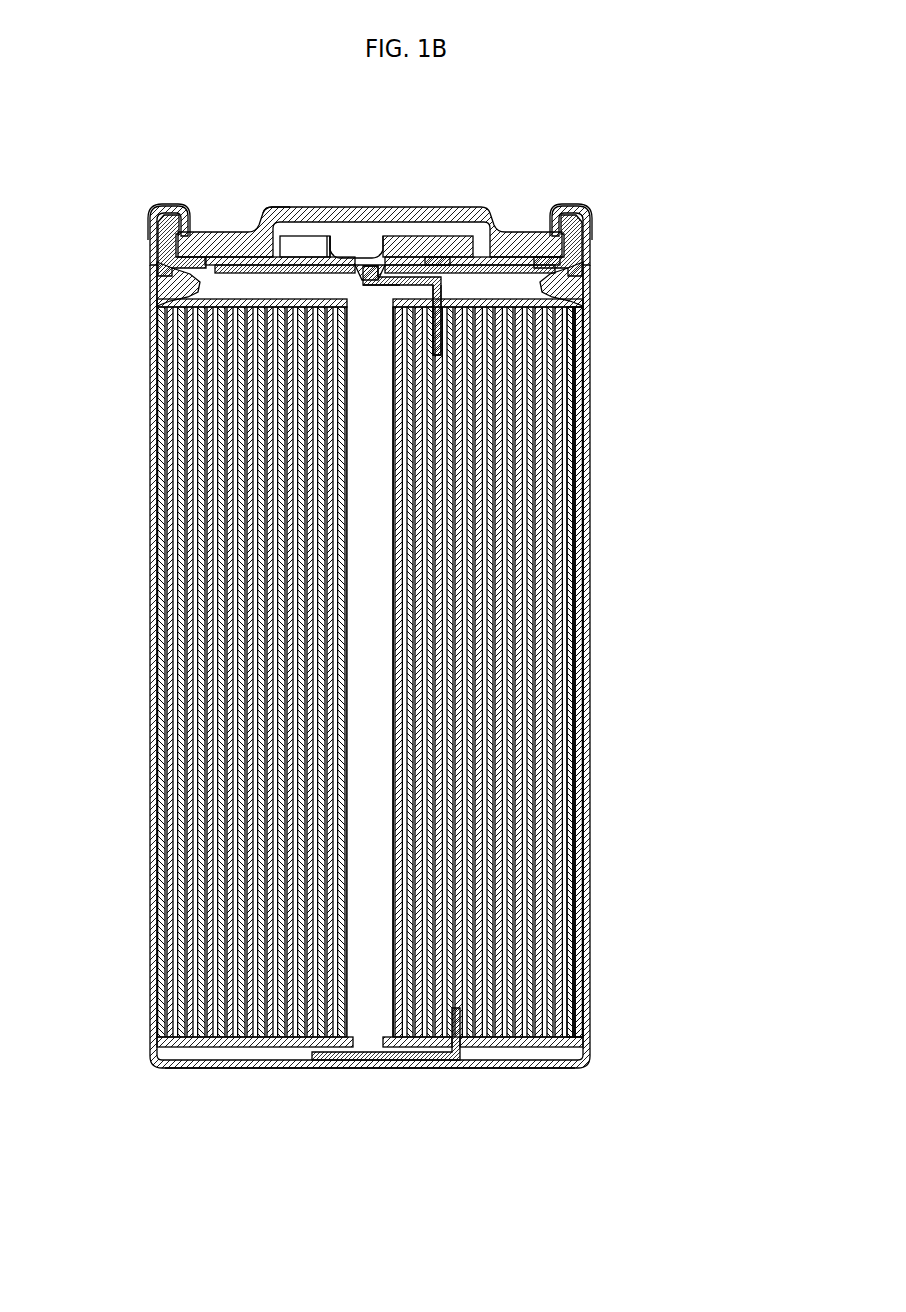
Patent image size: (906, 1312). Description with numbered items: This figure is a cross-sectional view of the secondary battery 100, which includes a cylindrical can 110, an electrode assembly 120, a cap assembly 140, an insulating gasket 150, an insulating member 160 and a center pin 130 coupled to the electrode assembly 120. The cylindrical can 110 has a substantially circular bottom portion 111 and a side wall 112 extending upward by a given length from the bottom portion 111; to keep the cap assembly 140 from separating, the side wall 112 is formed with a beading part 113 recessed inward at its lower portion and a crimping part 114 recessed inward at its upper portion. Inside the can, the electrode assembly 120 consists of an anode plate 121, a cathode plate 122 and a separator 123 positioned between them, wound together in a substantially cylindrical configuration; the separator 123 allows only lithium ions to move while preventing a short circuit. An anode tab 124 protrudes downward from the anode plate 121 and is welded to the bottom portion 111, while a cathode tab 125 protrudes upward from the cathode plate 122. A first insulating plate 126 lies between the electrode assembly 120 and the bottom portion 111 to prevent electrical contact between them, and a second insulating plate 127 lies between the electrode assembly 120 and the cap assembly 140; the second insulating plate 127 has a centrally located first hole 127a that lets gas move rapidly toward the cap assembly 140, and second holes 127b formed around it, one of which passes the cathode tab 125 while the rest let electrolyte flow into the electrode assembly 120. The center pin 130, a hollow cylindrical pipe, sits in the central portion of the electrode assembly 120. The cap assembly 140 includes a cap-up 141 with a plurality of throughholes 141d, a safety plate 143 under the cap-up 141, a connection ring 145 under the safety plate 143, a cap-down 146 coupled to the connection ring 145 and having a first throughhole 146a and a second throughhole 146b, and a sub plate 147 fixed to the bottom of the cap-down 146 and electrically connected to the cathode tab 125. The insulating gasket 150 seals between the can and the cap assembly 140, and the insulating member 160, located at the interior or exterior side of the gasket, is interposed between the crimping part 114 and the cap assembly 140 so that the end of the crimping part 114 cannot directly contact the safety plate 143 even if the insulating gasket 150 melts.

The secondary battery 100 is at (660, 141).
The cylindrical can 110 is at (613, 966).
The bottom portion 111 is at (520, 1067).
The side wall 112 is at (592, 887).
The beading part 113 is at (590, 283).
The crimping part 114 is at (575, 207).
The electrode assembly 120 is at (695, 572).
The anode plate 121 is at (580, 578).
The cathode plate 122 is at (574, 684).
The separator 123 is at (591, 628).
The anode tab 124 is at (370, 1058).
The cathode tab 125 is at (442, 305).
The first insulating plate 126 is at (233, 1045).
The second insulating plate 127 is at (360, 285).
The first hole 127a is at (372, 292).
The second holes 127b is at (370, 328).
The center pin 130 is at (398, 745).
The cap assembly 140 is at (237, 170).
The cap-up 141 is at (479, 207).
The throughholes 141d is at (345, 232).
The safety plate 143 is at (443, 212).
The connection ring 145 is at (208, 208).
The cap-down 146 is at (520, 232).
The first throughhole 146a is at (378, 268).
The second throughhole 146b is at (275, 207).
The sub plate 147 is at (330, 273).
The insulating gasket 150 is at (165, 241).
The insulating member 160 is at (147, 213).